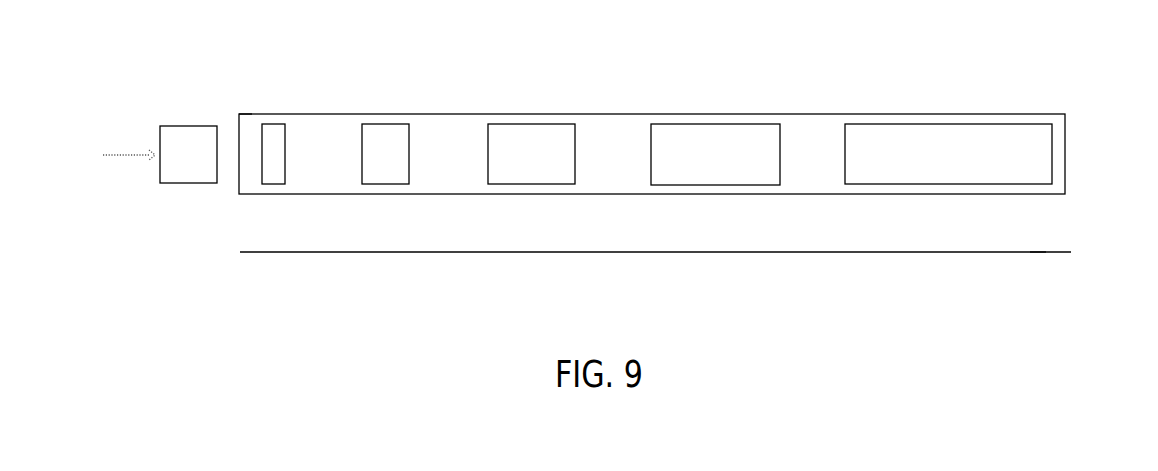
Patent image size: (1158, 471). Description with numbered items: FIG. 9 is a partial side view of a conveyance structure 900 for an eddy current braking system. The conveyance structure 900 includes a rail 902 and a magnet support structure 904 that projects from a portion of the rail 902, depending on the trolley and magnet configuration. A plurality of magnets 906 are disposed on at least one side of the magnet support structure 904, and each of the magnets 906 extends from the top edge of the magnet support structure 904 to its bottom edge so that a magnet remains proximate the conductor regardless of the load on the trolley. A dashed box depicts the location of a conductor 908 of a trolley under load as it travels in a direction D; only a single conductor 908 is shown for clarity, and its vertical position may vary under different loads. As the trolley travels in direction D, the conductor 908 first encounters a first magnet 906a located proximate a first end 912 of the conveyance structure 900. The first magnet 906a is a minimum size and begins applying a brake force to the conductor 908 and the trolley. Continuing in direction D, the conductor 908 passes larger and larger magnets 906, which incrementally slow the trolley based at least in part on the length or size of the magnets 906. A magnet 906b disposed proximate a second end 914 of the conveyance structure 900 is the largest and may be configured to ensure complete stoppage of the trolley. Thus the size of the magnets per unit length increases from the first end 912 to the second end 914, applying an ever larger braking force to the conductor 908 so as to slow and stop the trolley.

The conveyance structure 900 is at (1099, 82).
The rail 902 is at (1004, 228).
The magnet support structure 904 is at (1055, 148).
The magnets 906 is at (725, 143).
The first magnet 906a is at (277, 137).
The magnet 906b is at (1002, 148).
The conductor 908 is at (186, 163).
The first end 912 is at (251, 104).
The second end 914 is at (1038, 286).